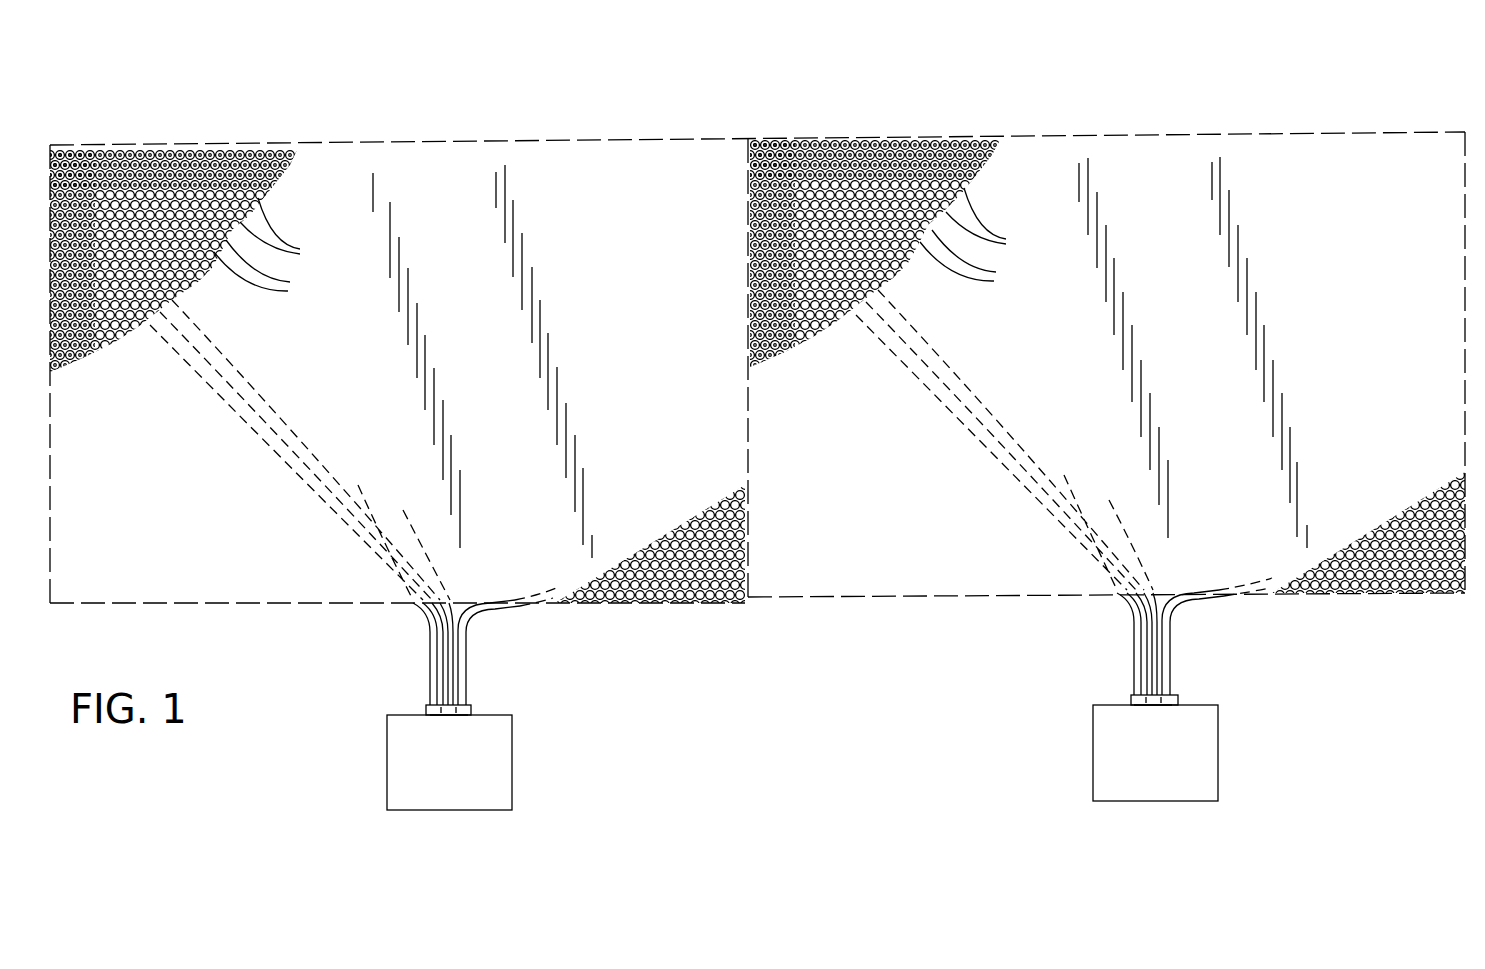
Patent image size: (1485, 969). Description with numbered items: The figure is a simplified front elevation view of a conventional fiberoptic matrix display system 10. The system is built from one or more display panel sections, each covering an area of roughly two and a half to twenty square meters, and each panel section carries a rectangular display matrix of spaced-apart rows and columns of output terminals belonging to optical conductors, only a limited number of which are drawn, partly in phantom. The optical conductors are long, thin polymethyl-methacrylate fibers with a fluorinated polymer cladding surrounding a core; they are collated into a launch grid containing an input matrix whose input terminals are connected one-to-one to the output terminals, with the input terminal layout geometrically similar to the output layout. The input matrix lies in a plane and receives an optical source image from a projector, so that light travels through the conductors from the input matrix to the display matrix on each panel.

The fiberoptic matrix display system 10 is at (447, 82).